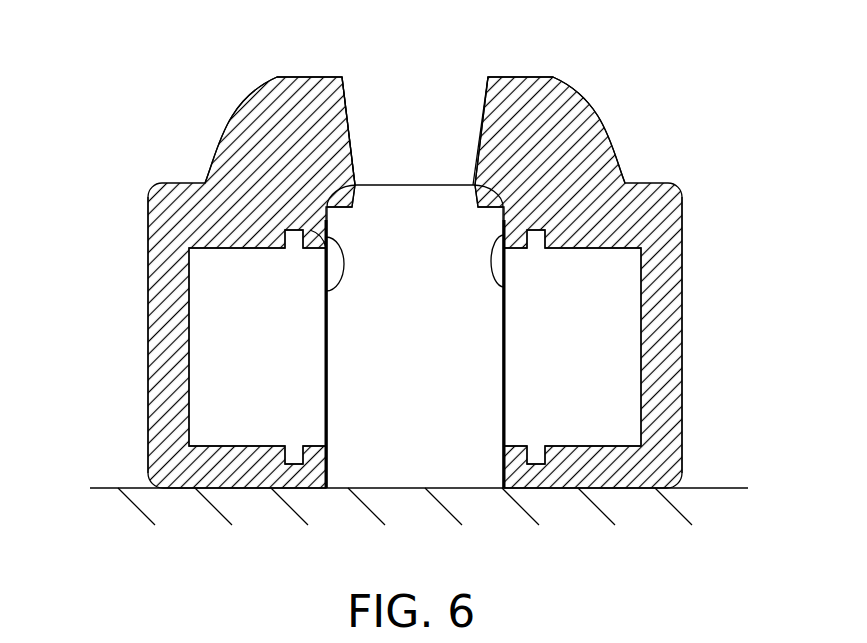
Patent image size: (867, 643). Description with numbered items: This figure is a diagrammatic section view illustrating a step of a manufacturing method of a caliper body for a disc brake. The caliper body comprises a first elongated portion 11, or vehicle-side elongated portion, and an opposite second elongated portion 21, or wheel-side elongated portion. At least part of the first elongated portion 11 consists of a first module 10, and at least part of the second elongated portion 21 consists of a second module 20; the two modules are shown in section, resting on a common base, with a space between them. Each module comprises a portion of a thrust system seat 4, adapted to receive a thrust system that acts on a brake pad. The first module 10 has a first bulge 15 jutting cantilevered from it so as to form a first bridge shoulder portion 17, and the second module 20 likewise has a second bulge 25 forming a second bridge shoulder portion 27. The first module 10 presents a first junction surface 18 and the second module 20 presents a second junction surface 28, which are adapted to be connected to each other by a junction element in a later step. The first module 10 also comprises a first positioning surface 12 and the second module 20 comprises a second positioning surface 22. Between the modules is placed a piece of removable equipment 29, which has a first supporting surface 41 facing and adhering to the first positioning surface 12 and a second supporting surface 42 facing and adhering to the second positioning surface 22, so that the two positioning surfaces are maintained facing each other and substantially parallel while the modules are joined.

The thrust system seat 4 is at (190, 405).
The first module 10 is at (173, 235).
The first elongated portion 11 is at (150, 393).
The first positioning surface 12 is at (326, 291).
The first bulge 15 is at (227, 131).
The first bridge shoulder portion 17 is at (327, 173).
The first junction surface 18 is at (352, 122).
The second module 20 is at (668, 238).
The second elongated portion 21 is at (681, 427).
The second positioning surface 22 is at (504, 287).
The second bulge 25 is at (588, 130).
The second bridge shoulder portion 27 is at (500, 173).
The second junction surface 28 is at (481, 130).
The removable equipment 29 is at (421, 338).
The first supporting surface 41 is at (313, 248).
The second supporting surface 42 is at (507, 220).